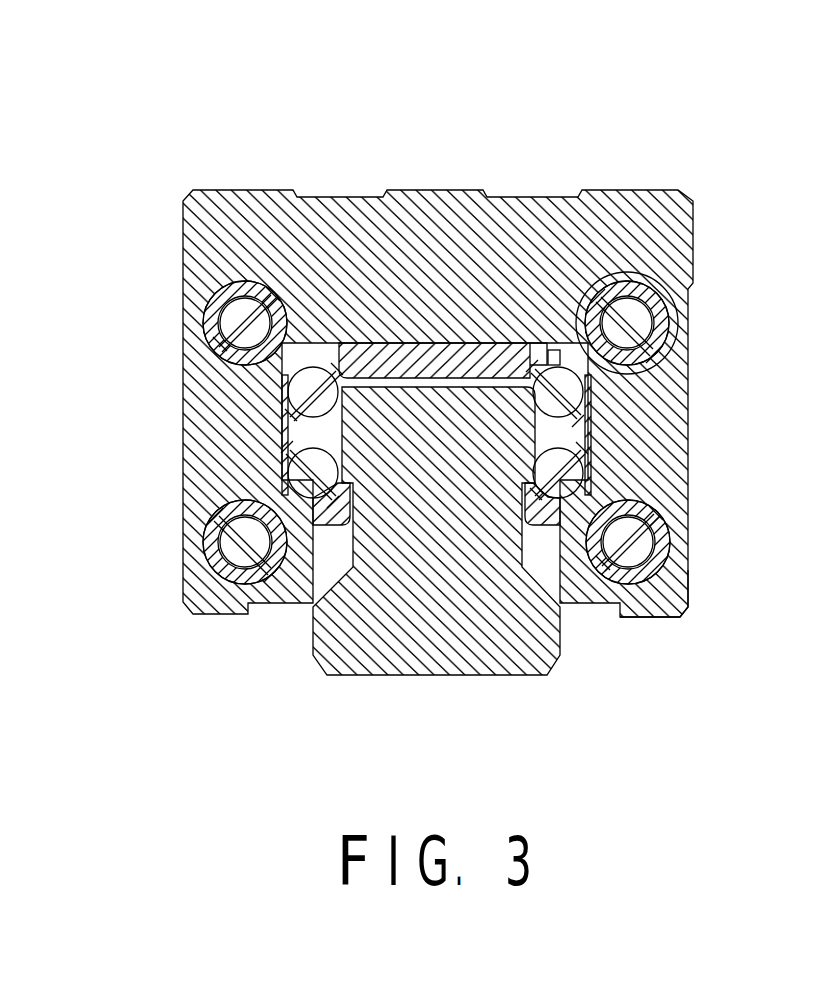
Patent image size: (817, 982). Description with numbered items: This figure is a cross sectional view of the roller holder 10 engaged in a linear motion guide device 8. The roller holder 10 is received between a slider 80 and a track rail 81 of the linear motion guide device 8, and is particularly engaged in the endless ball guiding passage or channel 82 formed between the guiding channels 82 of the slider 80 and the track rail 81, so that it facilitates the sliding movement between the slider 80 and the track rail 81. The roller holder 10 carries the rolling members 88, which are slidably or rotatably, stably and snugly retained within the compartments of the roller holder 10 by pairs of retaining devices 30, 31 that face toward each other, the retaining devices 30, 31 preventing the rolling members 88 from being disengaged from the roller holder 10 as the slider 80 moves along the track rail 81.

The linear motion guide device 8 is at (434, 420).
The slider 80 is at (428, 212).
The track rail 81 is at (447, 653).
The guiding channel 82 is at (302, 367).
The retaining device 30 is at (217, 523).
The retaining device 31 is at (255, 572).
The roller holder 10 is at (615, 572).
The rolling member 88 is at (690, 592).